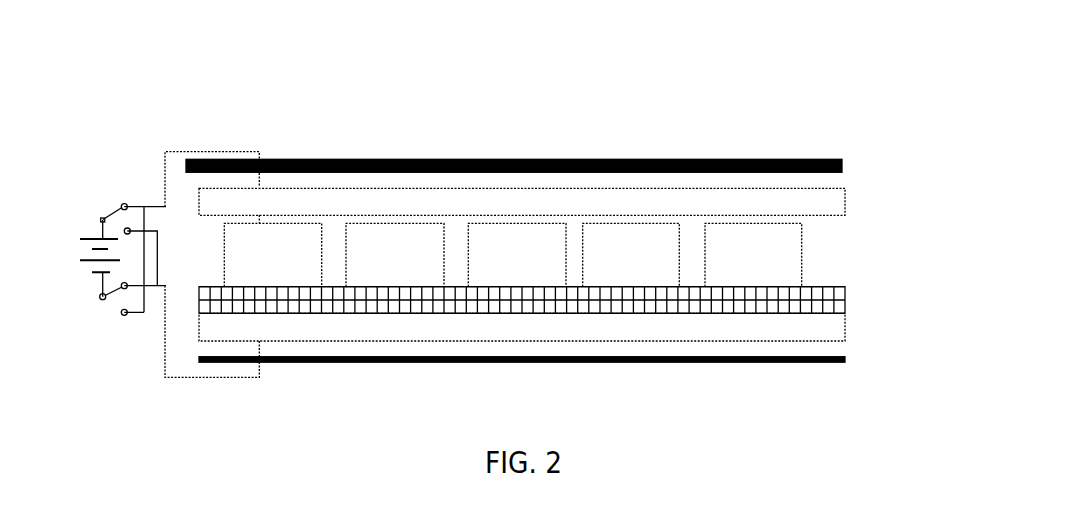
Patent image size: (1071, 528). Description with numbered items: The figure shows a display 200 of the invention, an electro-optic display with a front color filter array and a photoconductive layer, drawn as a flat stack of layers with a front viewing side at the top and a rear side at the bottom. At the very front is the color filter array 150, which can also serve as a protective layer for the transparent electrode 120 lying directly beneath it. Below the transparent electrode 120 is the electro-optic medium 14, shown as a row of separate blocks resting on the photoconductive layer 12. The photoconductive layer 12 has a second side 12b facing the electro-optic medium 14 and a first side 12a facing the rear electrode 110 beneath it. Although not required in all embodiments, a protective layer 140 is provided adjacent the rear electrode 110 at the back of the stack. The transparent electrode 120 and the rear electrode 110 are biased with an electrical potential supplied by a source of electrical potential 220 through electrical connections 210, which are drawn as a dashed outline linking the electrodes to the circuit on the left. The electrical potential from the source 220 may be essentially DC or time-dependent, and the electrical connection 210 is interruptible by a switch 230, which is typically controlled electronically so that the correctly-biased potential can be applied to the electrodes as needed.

The display 200 is at (676, 98).
The electrical connections 210 is at (175, 150).
The source of electrical potential 220 is at (86, 239).
The switch 230 is at (114, 292).
The color filter array 150 is at (854, 170).
The transparent electrode 120 is at (855, 207).
The electro-optic medium 14 is at (810, 261).
The photoconductive layer 12 is at (853, 296).
The second side 12b is at (852, 286).
The first side 12a is at (852, 315).
The rear electrode 110 is at (853, 341).
The protective layer 140 is at (854, 359).